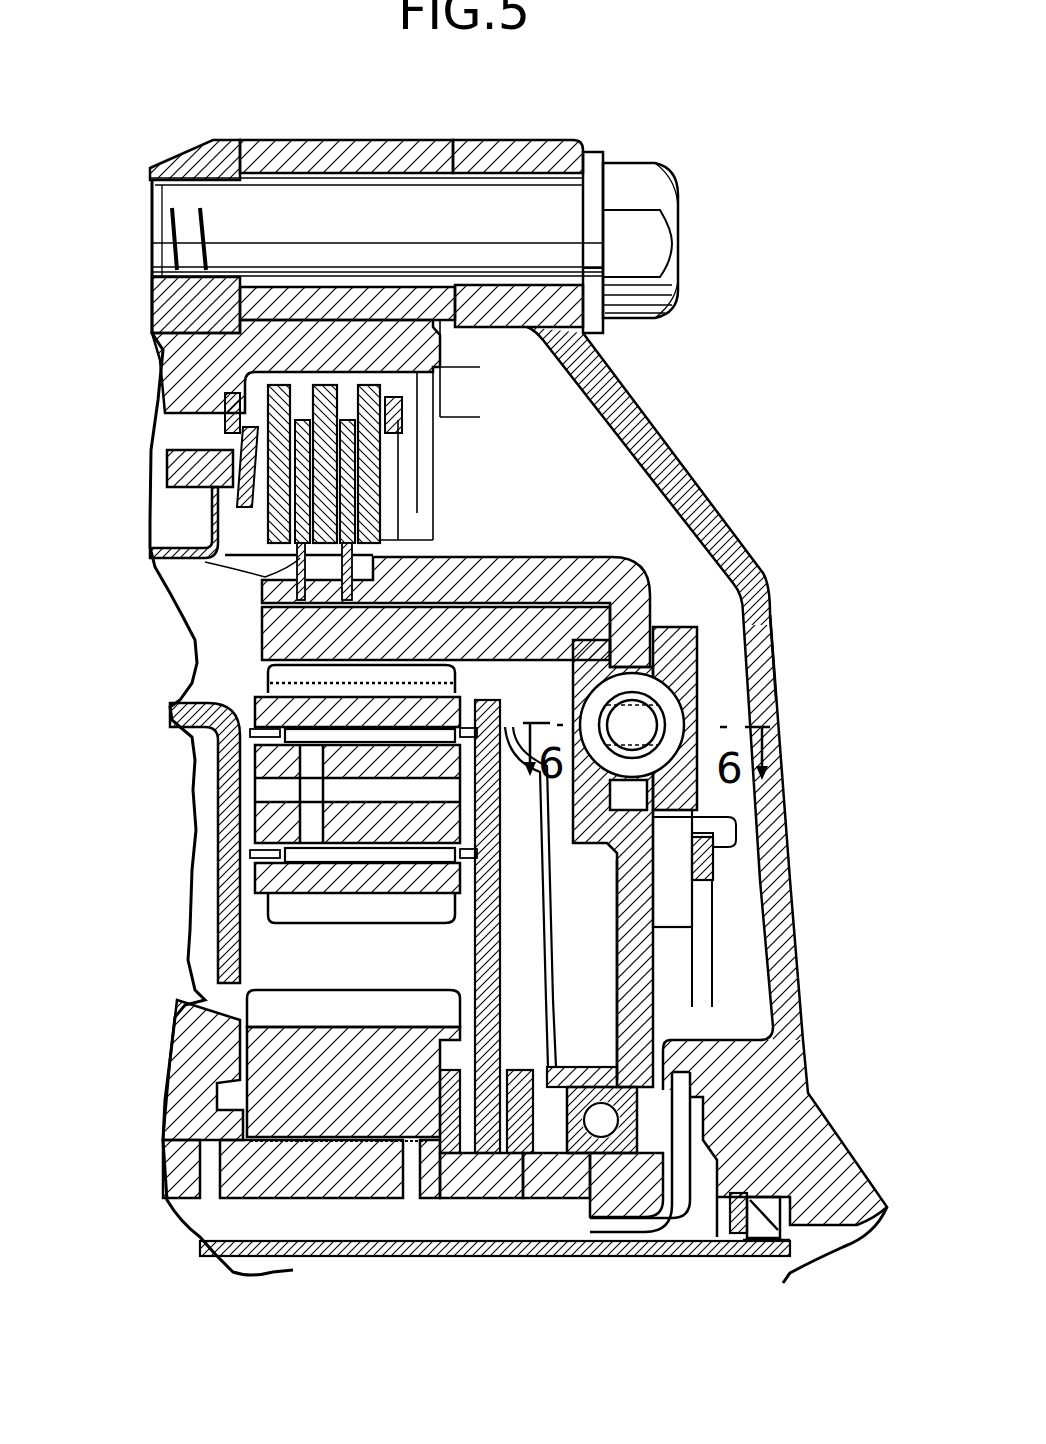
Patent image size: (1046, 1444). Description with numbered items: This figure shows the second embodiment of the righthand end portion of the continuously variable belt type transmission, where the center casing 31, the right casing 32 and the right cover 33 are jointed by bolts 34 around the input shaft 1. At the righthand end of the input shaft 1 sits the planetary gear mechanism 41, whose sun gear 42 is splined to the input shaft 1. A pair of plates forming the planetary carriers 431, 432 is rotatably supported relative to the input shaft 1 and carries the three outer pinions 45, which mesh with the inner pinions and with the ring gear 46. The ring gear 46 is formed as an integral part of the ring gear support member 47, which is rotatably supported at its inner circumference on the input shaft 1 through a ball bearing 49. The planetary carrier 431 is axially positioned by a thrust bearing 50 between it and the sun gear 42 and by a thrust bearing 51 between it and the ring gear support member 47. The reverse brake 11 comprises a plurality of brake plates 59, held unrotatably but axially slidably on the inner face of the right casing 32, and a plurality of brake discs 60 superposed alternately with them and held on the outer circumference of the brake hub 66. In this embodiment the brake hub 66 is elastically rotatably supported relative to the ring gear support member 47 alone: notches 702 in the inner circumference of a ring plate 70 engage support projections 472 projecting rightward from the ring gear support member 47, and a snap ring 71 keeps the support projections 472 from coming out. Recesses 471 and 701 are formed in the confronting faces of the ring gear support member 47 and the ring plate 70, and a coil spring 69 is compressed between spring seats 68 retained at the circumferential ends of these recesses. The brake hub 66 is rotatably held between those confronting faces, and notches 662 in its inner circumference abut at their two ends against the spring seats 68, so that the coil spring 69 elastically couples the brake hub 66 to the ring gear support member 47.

The input shaft 1 is at (173, 1173).
The reverse brake 11 is at (397, 472).
The center casing 31 is at (200, 162).
The right casing 32 is at (315, 155).
The right cover 33 is at (548, 148).
The bolts 34 is at (650, 243).
The planetary gear mechanism 41 is at (665, 522).
The sun gear 42 is at (380, 997).
The planetary carrier 431 is at (473, 927).
The planetary carrier 432 is at (233, 970).
The outer pinions 45 is at (347, 913).
The ring gear 46 is at (246, 661).
The ring gear support member 47 is at (665, 985).
The recesses 471 is at (530, 777).
The support projections 472 is at (735, 833).
The ball bearing 49 is at (597, 1117).
The thrust bearing 50 is at (400, 1177).
The thrust bearing 51 is at (523, 1200).
The brake plates 59 is at (368, 385).
The brake discs 60 is at (265, 578).
The brake hub 66 is at (562, 548).
The notches 662 is at (570, 850).
The spring seats 68 is at (662, 713).
The coil spring 69 is at (590, 720).
The ring plate 70 is at (705, 637).
The recesses 701 is at (645, 714).
The notches 702 is at (778, 745).
The snap ring 71 is at (712, 867).